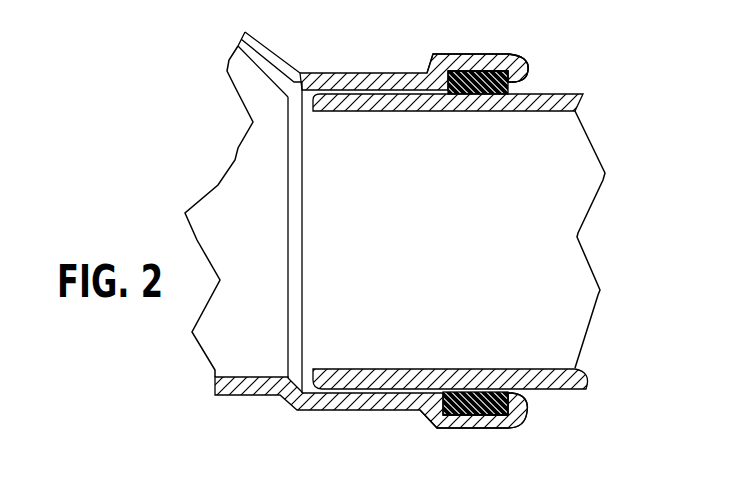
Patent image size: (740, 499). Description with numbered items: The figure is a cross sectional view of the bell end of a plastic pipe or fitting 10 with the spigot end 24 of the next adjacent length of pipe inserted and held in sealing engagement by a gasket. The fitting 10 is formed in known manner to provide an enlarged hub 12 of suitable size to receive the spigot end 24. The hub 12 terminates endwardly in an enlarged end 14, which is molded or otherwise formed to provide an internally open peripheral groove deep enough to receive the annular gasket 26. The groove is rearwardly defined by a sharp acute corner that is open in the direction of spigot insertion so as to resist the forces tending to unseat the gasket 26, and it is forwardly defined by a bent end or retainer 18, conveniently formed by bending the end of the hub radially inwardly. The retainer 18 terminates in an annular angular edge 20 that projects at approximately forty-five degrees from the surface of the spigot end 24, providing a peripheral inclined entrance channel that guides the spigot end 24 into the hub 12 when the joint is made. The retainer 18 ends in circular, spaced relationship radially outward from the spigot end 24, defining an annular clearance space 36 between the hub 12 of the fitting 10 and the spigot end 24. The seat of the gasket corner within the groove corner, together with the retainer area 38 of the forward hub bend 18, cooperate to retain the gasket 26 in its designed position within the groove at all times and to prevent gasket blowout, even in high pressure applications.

The plastic pipe or fitting 10 is at (272, 52).
The enlarged hub 12 is at (366, 73).
The enlarged end 14 is at (480, 54).
The annular angular edge 20 is at (527, 80).
The annular gasket 26 is at (470, 94).
The spigot end 24 is at (400, 369).
The retainer area 38 is at (505, 392).
The annular clearance space 36 is at (527, 395).
The bent end or retainer 18 is at (520, 420).